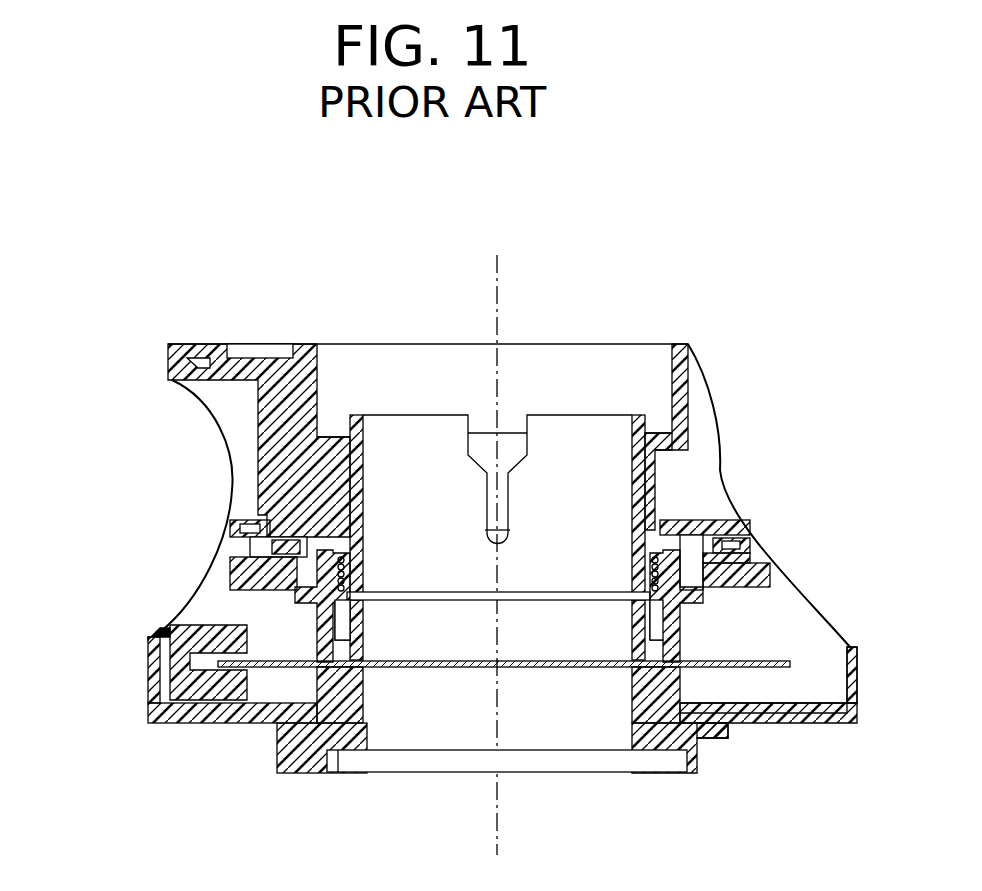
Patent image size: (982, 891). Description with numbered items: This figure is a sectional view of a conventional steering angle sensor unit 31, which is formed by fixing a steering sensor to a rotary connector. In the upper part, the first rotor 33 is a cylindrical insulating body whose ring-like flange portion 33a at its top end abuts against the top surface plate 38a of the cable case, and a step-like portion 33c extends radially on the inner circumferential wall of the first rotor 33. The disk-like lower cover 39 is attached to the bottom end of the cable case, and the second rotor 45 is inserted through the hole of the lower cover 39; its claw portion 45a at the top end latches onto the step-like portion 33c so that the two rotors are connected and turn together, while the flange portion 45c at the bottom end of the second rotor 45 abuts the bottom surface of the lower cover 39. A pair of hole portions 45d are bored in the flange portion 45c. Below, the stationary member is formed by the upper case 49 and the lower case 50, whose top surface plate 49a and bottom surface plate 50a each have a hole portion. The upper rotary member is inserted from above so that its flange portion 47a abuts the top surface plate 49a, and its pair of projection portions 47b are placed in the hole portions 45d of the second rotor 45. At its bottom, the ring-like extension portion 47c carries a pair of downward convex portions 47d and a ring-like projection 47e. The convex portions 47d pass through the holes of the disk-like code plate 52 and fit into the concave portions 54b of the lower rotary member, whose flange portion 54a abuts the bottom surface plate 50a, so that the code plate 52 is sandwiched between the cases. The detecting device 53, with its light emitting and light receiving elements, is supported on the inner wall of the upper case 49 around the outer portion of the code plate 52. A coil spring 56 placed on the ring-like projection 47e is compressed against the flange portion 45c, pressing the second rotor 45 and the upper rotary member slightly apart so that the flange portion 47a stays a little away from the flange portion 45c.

The steering angle sensor unit 31 is at (128, 306).
The first rotor 33 is at (690, 405).
The flange portion 33a is at (198, 350).
The step-like portion 33c is at (662, 432).
The top surface plate 38a is at (200, 398).
The lower cover 39 is at (232, 520).
The second rotor 45 is at (630, 498).
The claw portion 45a is at (350, 433).
The flange portion 45c is at (732, 546).
The hole portions 45d is at (362, 540).
The flange portion 47a is at (752, 580).
The projection portions 47b is at (270, 548).
The extension portion 47c is at (372, 672).
The convex portions 47d is at (345, 705).
The ring-like projection 47e is at (367, 617).
The upper case 49 is at (162, 632).
The top surface plate 49a is at (230, 580).
The lower case 50 is at (152, 660).
The bottom surface plate 50a is at (185, 723).
The code plate 52 is at (782, 722).
The detecting device 53 is at (182, 690).
The flange portion 54a is at (295, 760).
The concave portions 54b is at (400, 700).
The coil spring 56 is at (348, 575).